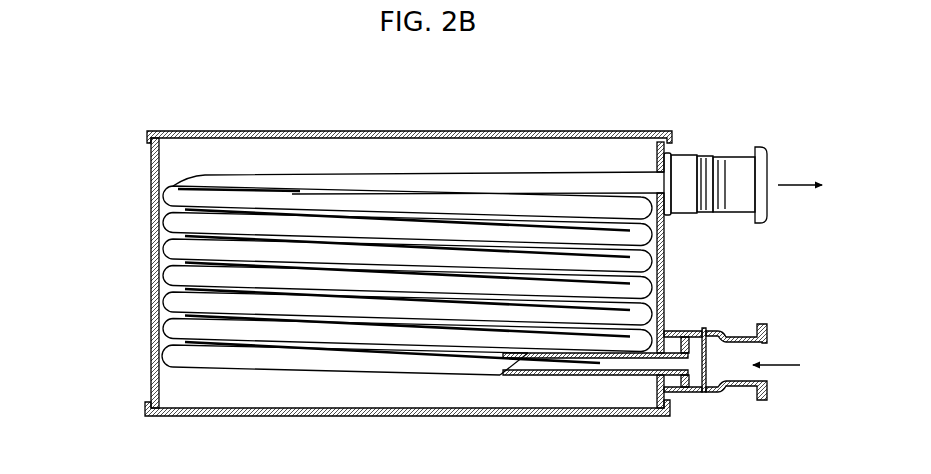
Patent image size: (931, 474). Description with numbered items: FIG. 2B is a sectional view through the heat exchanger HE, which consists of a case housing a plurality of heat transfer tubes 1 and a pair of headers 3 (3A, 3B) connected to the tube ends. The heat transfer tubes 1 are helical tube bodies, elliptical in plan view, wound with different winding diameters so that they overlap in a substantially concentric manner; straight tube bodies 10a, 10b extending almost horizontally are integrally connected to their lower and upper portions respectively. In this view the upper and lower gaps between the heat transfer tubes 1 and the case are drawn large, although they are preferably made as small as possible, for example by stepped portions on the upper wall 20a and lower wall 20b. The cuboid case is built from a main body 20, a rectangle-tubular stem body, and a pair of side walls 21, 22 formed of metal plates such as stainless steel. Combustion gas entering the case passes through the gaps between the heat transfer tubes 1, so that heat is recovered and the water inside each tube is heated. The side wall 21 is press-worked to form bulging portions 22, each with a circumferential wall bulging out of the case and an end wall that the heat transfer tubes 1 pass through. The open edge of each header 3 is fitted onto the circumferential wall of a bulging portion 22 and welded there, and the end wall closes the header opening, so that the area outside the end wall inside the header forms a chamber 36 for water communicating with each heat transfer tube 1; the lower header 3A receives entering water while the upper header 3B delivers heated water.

The heat exchanger HE is at (189, 114).
The heat transfer tube 1 is at (178, 183).
The straight tube body 10a is at (566, 372).
The straight tube body 10b is at (622, 180).
The main body 20 is at (487, 131).
The upper wall 20a is at (327, 131).
The lower wall 20b is at (264, 417).
The side wall 21 is at (665, 250).
The bulging portion 22 is at (152, 290).
The chamber 36 is at (689, 336).
The header 3 is at (759, 257).
The header 3A is at (706, 328).
The header 3B is at (713, 152).